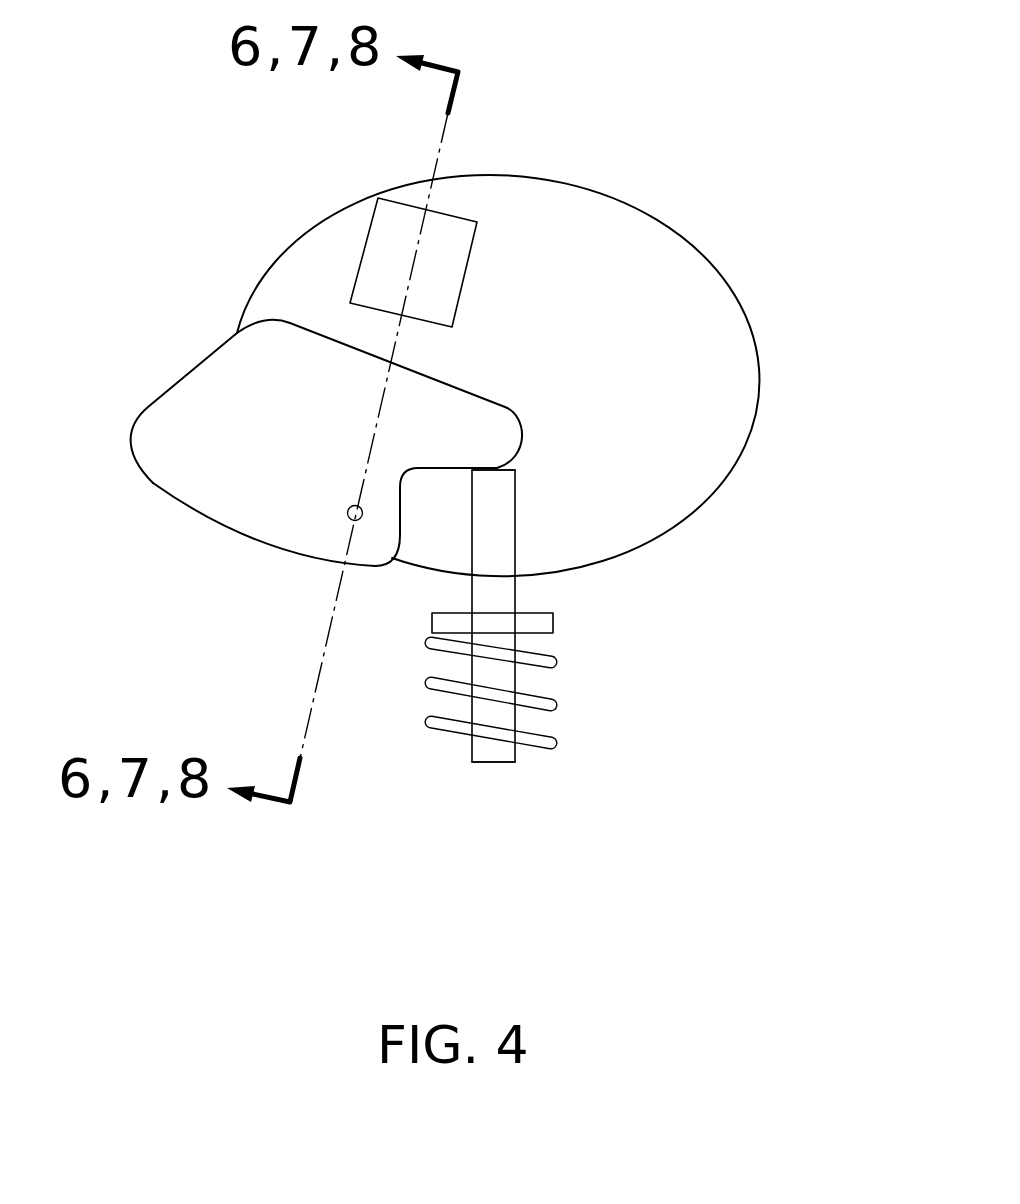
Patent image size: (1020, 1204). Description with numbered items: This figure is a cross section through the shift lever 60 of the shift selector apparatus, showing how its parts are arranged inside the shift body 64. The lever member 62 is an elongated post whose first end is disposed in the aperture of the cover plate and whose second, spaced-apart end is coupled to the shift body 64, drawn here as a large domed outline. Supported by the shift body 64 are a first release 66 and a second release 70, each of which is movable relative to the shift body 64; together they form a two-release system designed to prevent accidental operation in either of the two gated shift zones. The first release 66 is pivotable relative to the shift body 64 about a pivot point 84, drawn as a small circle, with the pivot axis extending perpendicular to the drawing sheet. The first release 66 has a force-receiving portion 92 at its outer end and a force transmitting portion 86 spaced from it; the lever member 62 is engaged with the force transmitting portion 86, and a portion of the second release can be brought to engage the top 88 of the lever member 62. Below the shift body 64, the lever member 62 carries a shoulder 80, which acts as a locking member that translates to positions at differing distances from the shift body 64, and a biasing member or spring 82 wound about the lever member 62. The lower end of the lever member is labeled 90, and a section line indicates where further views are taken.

The shift lever 60 is at (469, 432).
The lever member 62 is at (500, 535).
The shift body 64 is at (728, 302).
The first release 66 is at (182, 475).
The second release 70 is at (382, 232).
The shoulder 80 is at (555, 625).
The spring 82 is at (562, 700).
The pivot point 84 is at (347, 512).
The force transmitting portion 86 is at (457, 397).
The top of lever member 88 is at (517, 488).
The shaft lower end 90 is at (492, 763).
The force-receiving portion 92 is at (157, 402).